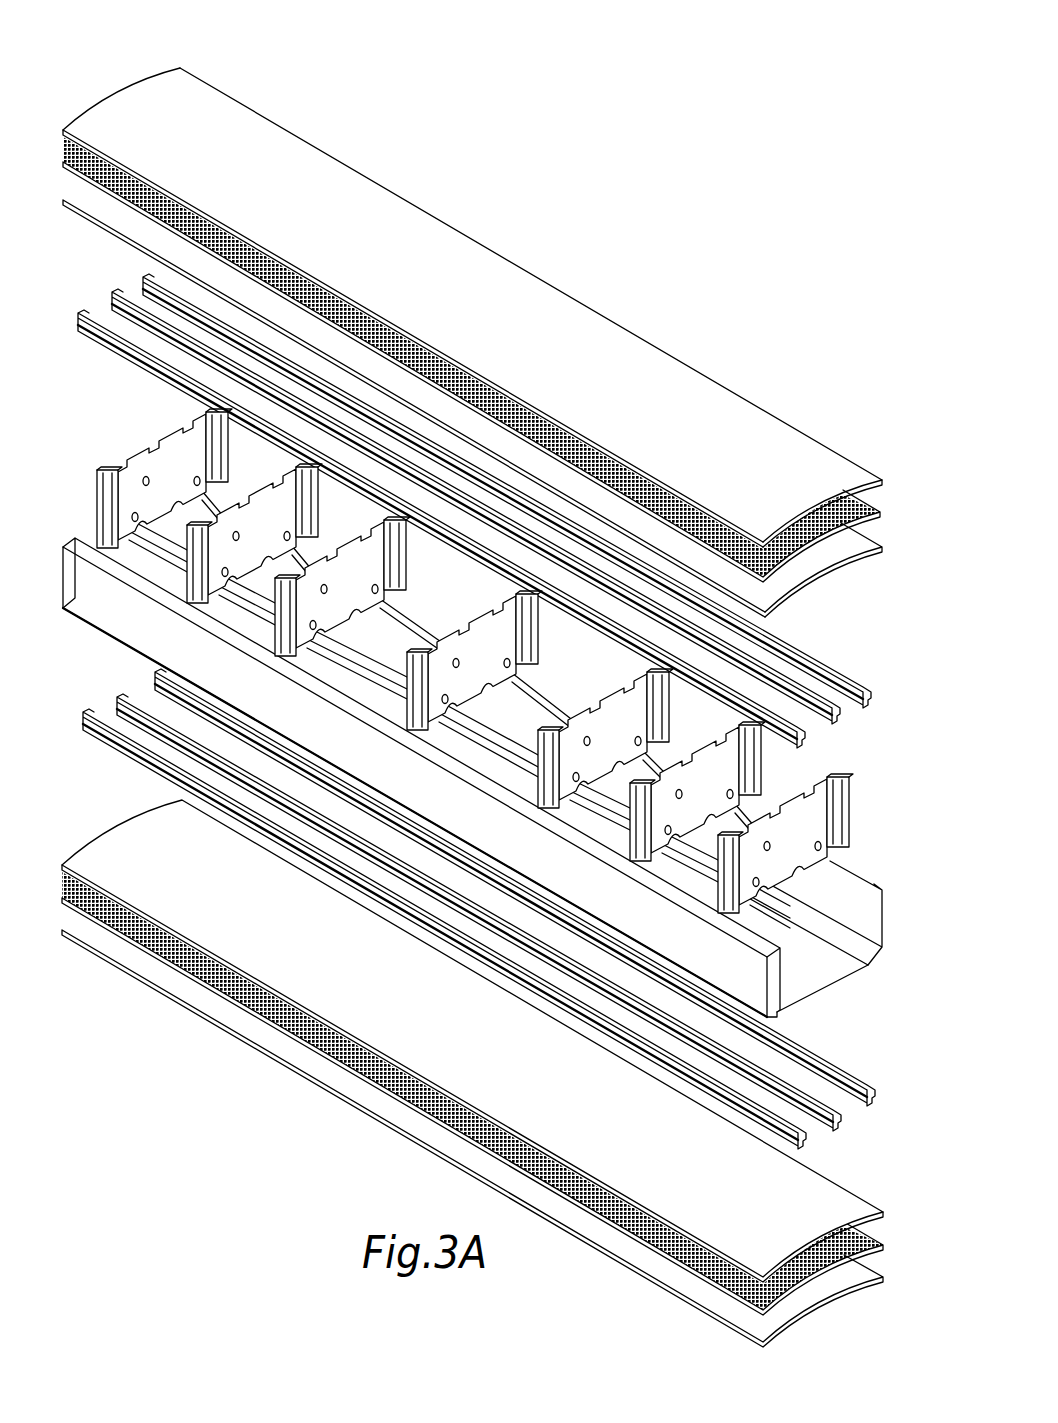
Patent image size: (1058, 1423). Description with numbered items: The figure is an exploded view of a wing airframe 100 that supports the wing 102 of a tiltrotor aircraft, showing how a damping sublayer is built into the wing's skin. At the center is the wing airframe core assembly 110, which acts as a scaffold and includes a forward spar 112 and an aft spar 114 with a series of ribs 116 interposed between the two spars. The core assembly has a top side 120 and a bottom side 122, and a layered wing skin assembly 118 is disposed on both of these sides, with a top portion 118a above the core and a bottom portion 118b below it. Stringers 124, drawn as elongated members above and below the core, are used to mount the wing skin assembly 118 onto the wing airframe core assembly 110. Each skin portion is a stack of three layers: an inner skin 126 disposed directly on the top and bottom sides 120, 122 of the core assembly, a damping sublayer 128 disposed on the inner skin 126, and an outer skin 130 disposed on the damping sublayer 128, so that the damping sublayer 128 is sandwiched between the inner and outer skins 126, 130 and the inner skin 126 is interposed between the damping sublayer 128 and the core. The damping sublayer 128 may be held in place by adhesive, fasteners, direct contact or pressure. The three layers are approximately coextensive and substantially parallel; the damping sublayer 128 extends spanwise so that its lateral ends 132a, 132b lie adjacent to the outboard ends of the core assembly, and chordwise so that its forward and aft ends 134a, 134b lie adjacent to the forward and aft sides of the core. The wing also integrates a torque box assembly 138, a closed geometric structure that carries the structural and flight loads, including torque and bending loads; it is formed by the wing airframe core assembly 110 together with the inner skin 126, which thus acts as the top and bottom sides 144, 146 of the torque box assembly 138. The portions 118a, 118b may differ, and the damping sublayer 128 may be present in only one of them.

The wing airframe 100 is at (476, 696).
The wing 102 is at (522, 176).
The wing airframe core assembly 110 is at (98, 460).
The forward spar 112 is at (767, 987).
The aft spar 114 is at (883, 942).
The ribs 116 is at (813, 825).
The wing skin assembly 118 is at (113, 72).
The top portion of wing skin assembly 118a is at (110, 88).
The bottom portion of wing skin assembly 118b is at (88, 852).
The top side of wing airframe core assembly 120 is at (63, 542).
The bottom side of wing airframe core assembly 122 is at (768, 1020).
The stringers 124 is at (820, 657).
The inner skin 126 is at (474, 741).
The damping sublayer 128 is at (62, 162).
The outer skin 130 is at (610, 325).
The lateral end of damping sublayer 132a is at (62, 133).
The lateral end of damping sublayer 132b is at (840, 530).
The forward end of damping sublayer 134a is at (110, 200).
The aft end of damping sublayer 134b is at (877, 497).
The torque box assembly 138 is at (151, 451).
The top side of torque box assembly 144 is at (63, 200).
The bottom side of torque box assembly 146 is at (878, 1210).